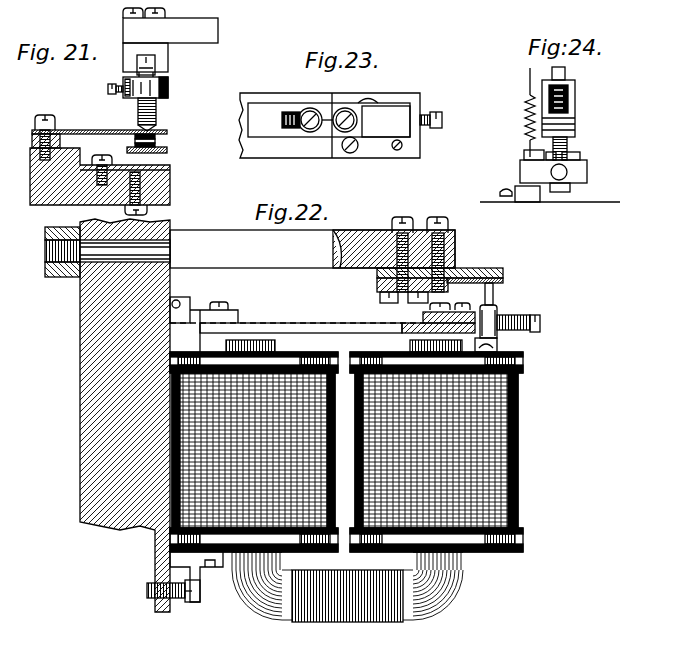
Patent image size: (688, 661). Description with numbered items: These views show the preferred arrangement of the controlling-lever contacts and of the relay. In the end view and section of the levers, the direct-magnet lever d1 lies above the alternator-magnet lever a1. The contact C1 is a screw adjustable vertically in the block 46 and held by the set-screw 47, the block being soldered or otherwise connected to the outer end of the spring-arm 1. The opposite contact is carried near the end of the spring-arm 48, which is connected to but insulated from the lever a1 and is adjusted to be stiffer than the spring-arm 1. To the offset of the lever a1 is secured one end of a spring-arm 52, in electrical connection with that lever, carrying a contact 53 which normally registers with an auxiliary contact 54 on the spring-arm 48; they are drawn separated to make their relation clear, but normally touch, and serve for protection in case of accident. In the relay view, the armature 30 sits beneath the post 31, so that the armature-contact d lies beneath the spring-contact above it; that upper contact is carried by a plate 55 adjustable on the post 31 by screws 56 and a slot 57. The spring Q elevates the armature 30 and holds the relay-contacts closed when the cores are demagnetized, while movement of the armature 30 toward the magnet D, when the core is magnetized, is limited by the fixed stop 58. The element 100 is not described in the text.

In FIG. 21, the direct-magnet lever d1 is at (218, 30).
In FIG. 22, the direct-magnet lever d1 is at (495, 292).
In FIG. 21, the spring-arm 1 is at (168, 80).
In FIG. 21, the block 46 is at (168, 93).
In FIG. 21, the set-screw 47 is at (107, 92).
In FIG. 21, the contact C1 is at (157, 118).
In FIG. 21, the spring-arm 52 is at (65, 131).
In FIG. 21, the contact 53 is at (134, 140).
In FIG. 21, the auxiliary contact 54 is at (156, 142).
In FIG. 21, the spring-arm 48 is at (168, 152).
In FIG. 21, the alternator-magnet lever a1 is at (170, 178).
In FIG. 23, the post 31 is at (260, 103).
In FIG. 23, the slot 57 is at (290, 110).
In FIG. 22, the slot 57 is at (377, 278).
In FIG. 23, the screws 56 is at (348, 108).
In FIG. 22, the screws 56 is at (449, 248).
In FIG. 23, the plate 55 is at (392, 104).
In FIG. 22, the plate 55 is at (480, 275).
In FIG. 24, the spring Q is at (524, 115).
In FIG. 24, the armature 30 is at (519, 173).
In FIG. 22, the armature 30 is at (313, 324).
In FIG. 24, the fixed stop 58 is at (525, 204).
In FIG. 22, the fixed stop 58 is at (498, 347).
In FIG. 22, the frame wall 100 is at (78, 385).
In FIG. 22, the armature-contact d is at (498, 309).
In FIG. 22, the magnet D is at (520, 446).